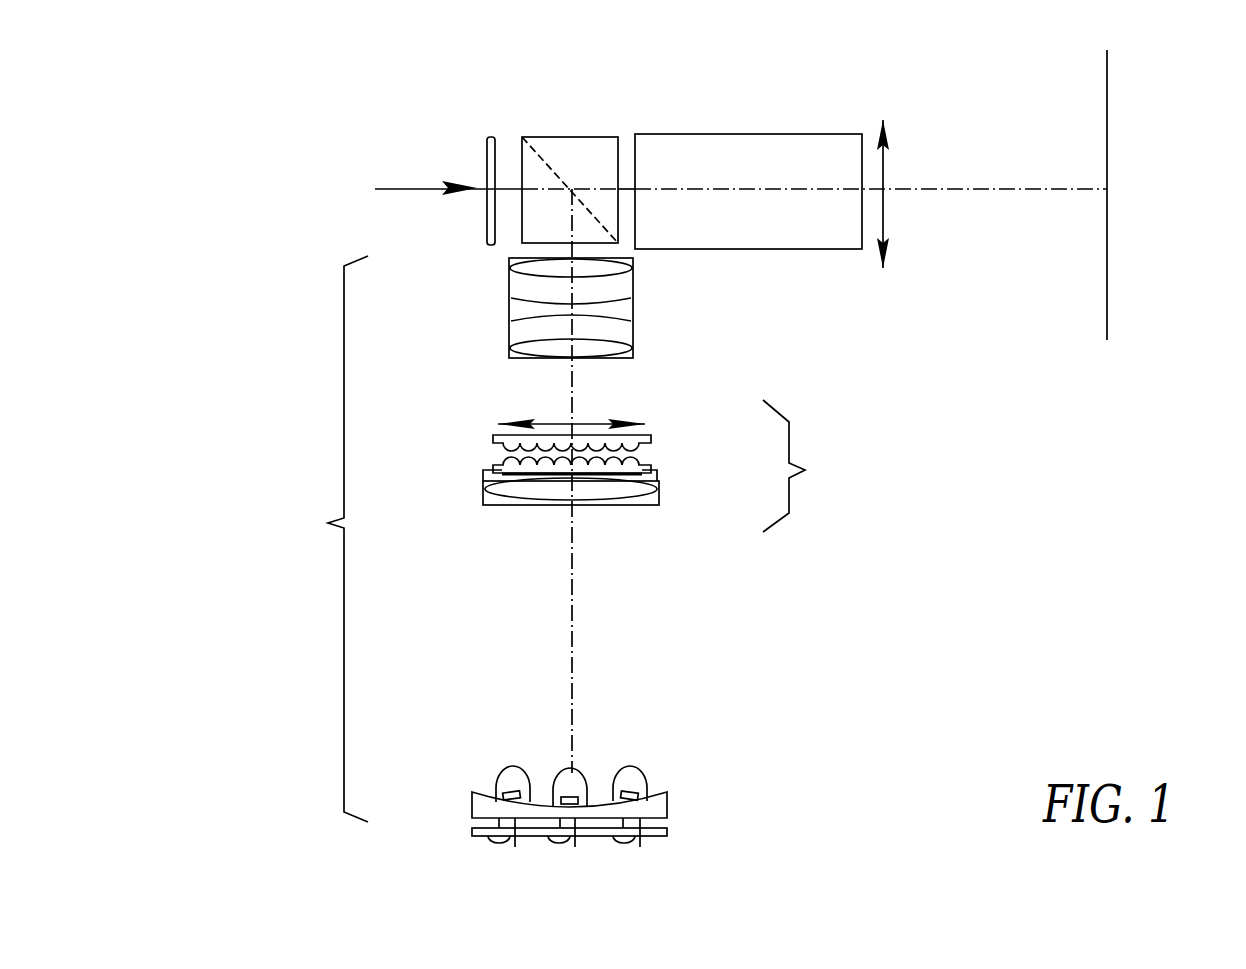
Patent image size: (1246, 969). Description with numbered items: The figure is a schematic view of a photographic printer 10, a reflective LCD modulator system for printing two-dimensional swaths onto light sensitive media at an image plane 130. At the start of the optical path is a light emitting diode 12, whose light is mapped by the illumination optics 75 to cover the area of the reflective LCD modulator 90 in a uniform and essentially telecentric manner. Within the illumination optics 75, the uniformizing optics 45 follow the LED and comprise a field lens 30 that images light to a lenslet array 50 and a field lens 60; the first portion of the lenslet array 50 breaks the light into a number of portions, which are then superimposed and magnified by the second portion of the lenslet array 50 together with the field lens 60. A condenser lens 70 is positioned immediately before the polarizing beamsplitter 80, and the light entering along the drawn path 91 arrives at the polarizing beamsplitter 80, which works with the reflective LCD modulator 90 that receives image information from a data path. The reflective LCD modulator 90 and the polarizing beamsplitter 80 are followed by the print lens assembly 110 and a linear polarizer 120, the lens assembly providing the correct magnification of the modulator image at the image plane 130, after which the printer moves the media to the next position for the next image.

The printer 10 is at (198, 180).
The light emitting diode 12 is at (698, 781).
The field lens 30 is at (641, 505).
The uniformizing optics 45 is at (806, 466).
The lenslet array 50 is at (684, 455).
The field lens 60 is at (623, 346).
The condenser lens 70 is at (492, 326).
The illumination optics 75 is at (324, 539).
The polarizing beamsplitter 80 is at (574, 128).
The reflective LCD modulator 90 is at (489, 137).
The input light beam 91 is at (399, 188).
The print lens assembly 110 is at (730, 134).
The linear polarizer 120 is at (883, 173).
The image plane 130 is at (1107, 133).